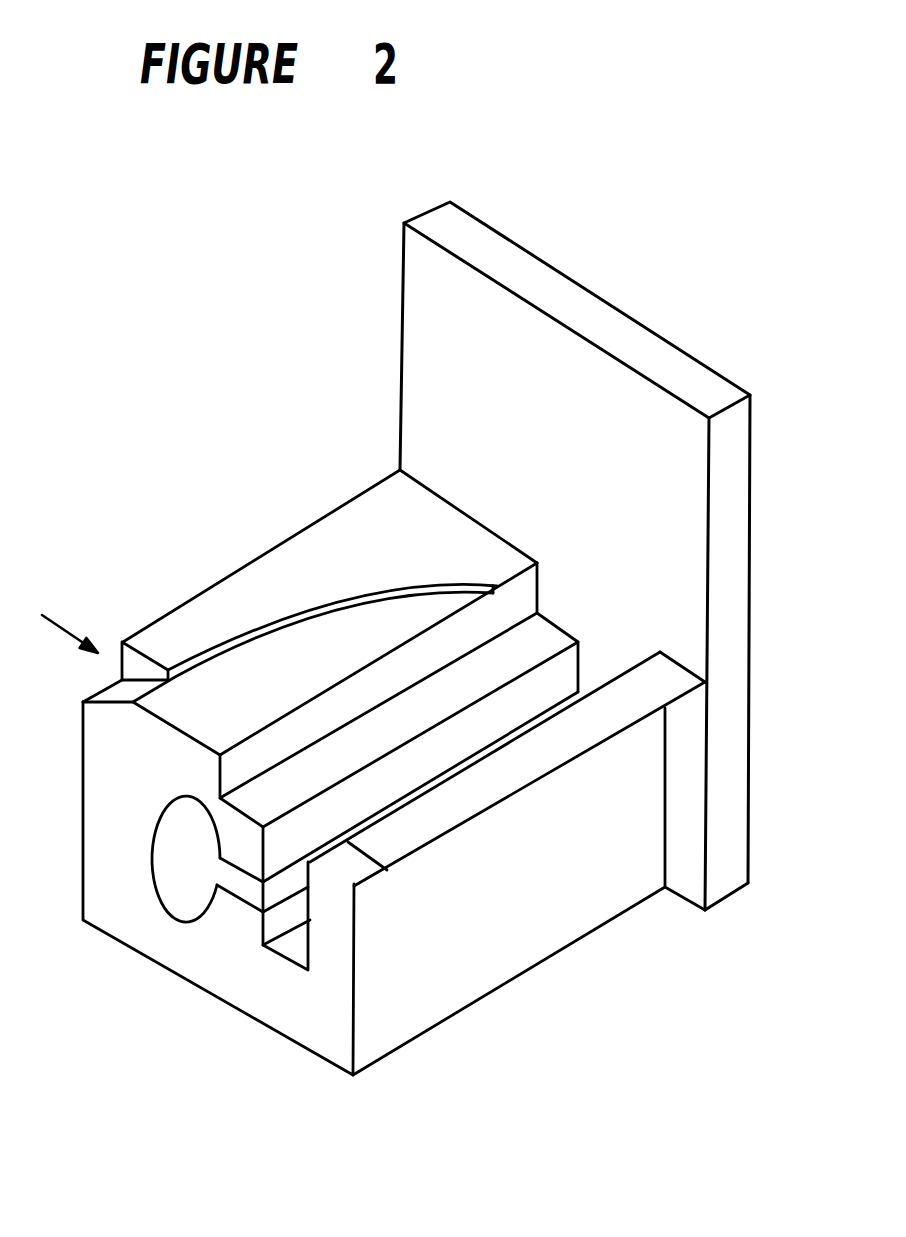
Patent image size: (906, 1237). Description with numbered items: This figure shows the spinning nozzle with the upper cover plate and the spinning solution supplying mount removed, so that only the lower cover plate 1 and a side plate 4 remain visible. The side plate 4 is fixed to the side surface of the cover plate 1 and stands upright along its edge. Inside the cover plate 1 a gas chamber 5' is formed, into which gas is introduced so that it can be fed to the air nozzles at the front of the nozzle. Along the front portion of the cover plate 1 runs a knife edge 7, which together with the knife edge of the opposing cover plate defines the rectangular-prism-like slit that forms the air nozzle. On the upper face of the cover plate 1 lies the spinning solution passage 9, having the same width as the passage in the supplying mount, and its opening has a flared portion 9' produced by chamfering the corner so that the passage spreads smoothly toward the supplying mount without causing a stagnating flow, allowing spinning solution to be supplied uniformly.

The cover plate 1 is at (168, 937).
The side plate 4 is at (728, 549).
The gas chamber 5' is at (145, 859).
The knife edge 7 is at (362, 862).
The spinning solution passage 9 is at (104, 698).
The flared portion 9' is at (315, 597).